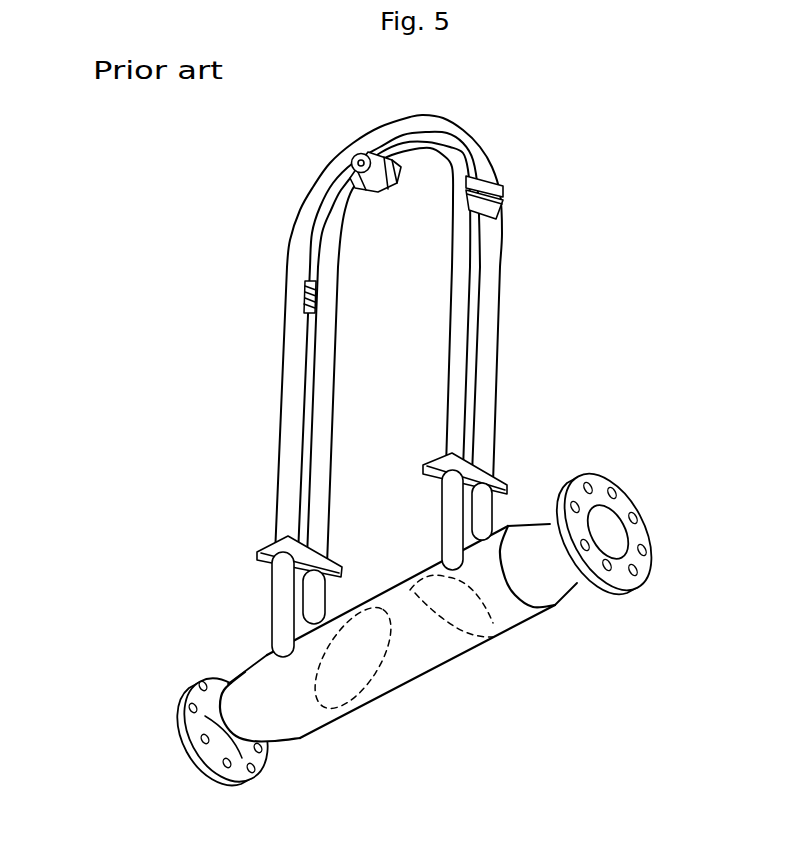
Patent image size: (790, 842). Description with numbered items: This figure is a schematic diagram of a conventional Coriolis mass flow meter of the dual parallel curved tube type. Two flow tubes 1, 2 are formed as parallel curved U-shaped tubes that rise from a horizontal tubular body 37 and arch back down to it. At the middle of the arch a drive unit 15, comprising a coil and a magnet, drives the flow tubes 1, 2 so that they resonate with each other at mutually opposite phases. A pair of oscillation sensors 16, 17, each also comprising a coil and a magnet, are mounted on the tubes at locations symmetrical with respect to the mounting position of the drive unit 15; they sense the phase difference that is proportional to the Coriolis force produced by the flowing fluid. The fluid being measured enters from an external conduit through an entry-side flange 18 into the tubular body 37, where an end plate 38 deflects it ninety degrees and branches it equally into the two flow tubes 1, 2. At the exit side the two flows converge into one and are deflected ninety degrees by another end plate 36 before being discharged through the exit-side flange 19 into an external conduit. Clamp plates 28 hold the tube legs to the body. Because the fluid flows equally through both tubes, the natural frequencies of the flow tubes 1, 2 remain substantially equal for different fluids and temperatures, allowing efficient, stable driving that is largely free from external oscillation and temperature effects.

The flow tube 1 is at (457, 303).
The flow tube 2 is at (493, 297).
The drive unit 15 is at (350, 154).
The oscillation sensor 16 is at (300, 289).
The oscillation sensor 17 is at (497, 183).
The entry-side flange 18 is at (183, 715).
The exit-side flange 19 is at (603, 478).
The clamp plate 28 is at (477, 460).
The end plate 36 is at (475, 629).
The tubular body 37 is at (293, 715).
The end plate 38 is at (365, 678).